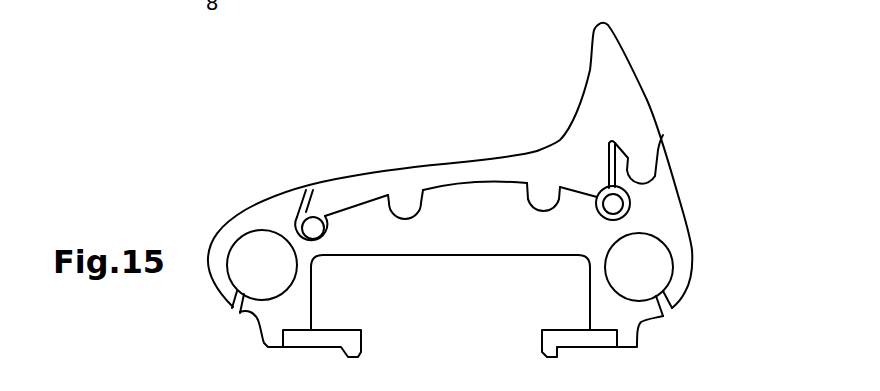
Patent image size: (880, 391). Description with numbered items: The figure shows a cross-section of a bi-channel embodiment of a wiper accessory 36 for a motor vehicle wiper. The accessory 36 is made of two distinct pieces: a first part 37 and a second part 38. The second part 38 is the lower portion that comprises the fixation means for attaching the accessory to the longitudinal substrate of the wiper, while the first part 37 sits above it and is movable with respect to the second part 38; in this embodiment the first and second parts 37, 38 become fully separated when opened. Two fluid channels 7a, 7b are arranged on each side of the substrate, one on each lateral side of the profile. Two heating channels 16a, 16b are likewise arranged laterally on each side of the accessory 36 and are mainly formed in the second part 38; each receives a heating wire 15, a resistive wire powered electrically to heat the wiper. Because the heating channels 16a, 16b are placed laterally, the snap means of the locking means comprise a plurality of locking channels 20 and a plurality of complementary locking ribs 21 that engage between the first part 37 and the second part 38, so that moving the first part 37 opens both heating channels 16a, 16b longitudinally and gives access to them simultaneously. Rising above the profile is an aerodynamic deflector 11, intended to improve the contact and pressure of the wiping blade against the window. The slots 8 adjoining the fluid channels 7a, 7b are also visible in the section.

The accessory 36 is at (398, 112).
The first part 37 is at (465, 172).
The second part 38 is at (511, 259).
The aerodynamic deflector 11 is at (613, 62).
The fluid channel 7a is at (242, 260).
The fluid channel 7b is at (663, 262).
The slot 8 is at (236, 316).
The heating wire 15 is at (312, 228).
The heating channel 16a is at (307, 227).
The heating channel 16b is at (602, 210).
The locking channel 20 is at (418, 212).
The locking rib 21 is at (408, 203).